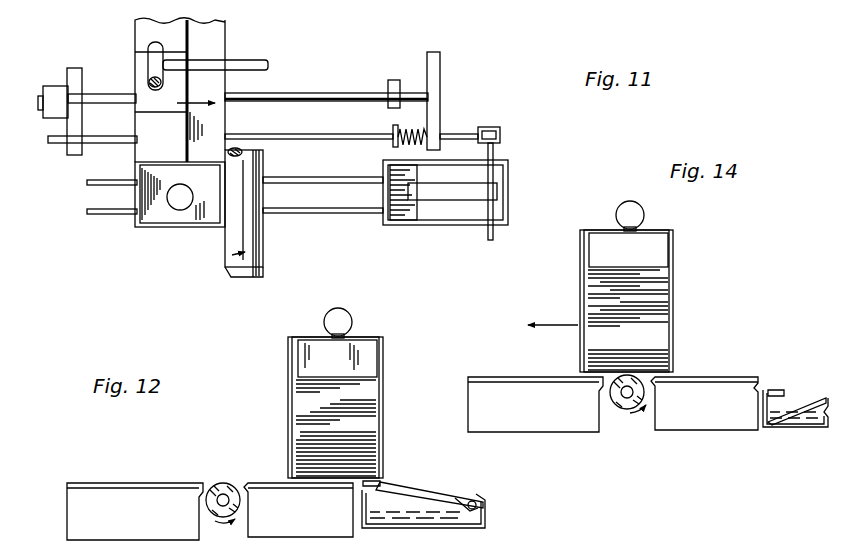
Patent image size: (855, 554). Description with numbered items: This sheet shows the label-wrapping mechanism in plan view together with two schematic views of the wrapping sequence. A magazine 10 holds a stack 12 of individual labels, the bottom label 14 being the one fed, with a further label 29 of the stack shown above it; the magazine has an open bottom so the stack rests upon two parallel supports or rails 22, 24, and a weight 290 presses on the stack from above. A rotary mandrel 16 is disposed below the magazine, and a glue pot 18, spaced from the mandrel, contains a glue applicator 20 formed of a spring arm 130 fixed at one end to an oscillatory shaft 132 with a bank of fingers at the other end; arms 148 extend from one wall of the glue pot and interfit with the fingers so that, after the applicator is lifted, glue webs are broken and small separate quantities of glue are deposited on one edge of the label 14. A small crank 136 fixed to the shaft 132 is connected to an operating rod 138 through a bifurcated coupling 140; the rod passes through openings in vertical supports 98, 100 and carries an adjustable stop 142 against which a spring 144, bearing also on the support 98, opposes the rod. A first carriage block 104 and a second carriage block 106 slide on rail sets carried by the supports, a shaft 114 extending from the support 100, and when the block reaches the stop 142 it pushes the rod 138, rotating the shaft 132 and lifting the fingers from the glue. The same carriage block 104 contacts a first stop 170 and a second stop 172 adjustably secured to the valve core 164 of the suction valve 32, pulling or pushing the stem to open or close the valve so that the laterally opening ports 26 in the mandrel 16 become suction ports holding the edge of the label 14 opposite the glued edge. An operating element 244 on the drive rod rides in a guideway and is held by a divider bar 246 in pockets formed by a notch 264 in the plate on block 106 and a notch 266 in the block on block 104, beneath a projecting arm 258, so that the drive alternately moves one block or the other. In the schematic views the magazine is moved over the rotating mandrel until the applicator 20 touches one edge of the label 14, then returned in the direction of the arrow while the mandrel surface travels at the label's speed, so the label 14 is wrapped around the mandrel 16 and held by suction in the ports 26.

In FIG. 11, the magazine 10 is at (170, 233).
In FIG. 12, the magazine 10 is at (288, 400).
In FIG. 14, the magazine 10 is at (580, 270).
In FIG. 12, the stack of labels 12 is at (366, 407).
In FIG. 14, the stack of labels 12 is at (655, 319).
In FIG. 12, the bottom label 14 is at (372, 480).
In FIG. 14, the bottom label 14 is at (612, 394).
In FIG. 11, the rotary mandrel 16 is at (256, 276).
In FIG. 12, the rotary mandrel 16 is at (218, 483).
In FIG. 14, the rotary mandrel 16 is at (642, 396).
In FIG. 11, the glue pot 18 is at (508, 182).
In FIG. 12, the glue pot 18 is at (486, 515).
In FIG. 14, the glue pot 18 is at (808, 427).
In FIG. 11, the glue applicator 20 is at (437, 180).
In FIG. 12, the glue applicator 20 is at (413, 480).
In FIG. 14, the glue applicator 20 is at (800, 408).
In FIG. 11, the support rail 22 is at (180, 81).
In FIG. 12, the support rail 22 is at (190, 530).
In FIG. 14, the support rail 22 is at (532, 425).
In FIG. 11, the support rail 24 is at (333, 178).
In FIG. 12, the suction ports 26 is at (232, 488).
In FIG. 14, the suction ports 26 is at (622, 408).
In FIG. 12, the top card 29 is at (366, 356).
In FIG. 11, the suction valve 32 is at (52, 84).
In FIG. 11, the vertical support 98 is at (440, 86).
In FIG. 11, the vertical support 100 is at (76, 70).
In FIG. 11, the first carriage block 104 is at (222, 140).
In FIG. 11, the second carriage block 106 is at (217, 30).
In FIG. 11, the drive shaft 114 is at (127, 126).
In FIG. 11, the spring arm 130 is at (455, 190).
In FIG. 11, the oscillatory shaft 132 is at (498, 214).
In FIG. 14, the oscillatory shaft 132 is at (772, 424).
In FIG. 11, the crank 136 is at (500, 134).
In FIG. 11, the operating rod 138 is at (313, 134).
In FIG. 11, the bifurcated coupling 140 is at (490, 127).
In FIG. 11, the stop 142 is at (393, 130).
In FIG. 11, the spring 144 is at (425, 130).
In FIG. 11, the arms 148 is at (396, 220).
In FIG. 14, the arms 148 is at (776, 390).
In FIG. 11, the valve core 164 is at (293, 92).
In FIG. 11, the first stop 170 is at (393, 80).
In FIG. 11, the second stop 172 is at (136, 90).
In FIG. 11, the operating element 244 is at (156, 88).
In FIG. 11, the divider bar 246 is at (248, 62).
In FIG. 11, the arm 258 is at (140, 66).
In FIG. 11, the notch 264 is at (165, 48).
In FIG. 11, the notch 266 is at (197, 92).
In FIG. 11, the weight 290 is at (200, 220).
In FIG. 14, the weight 290 is at (660, 254).